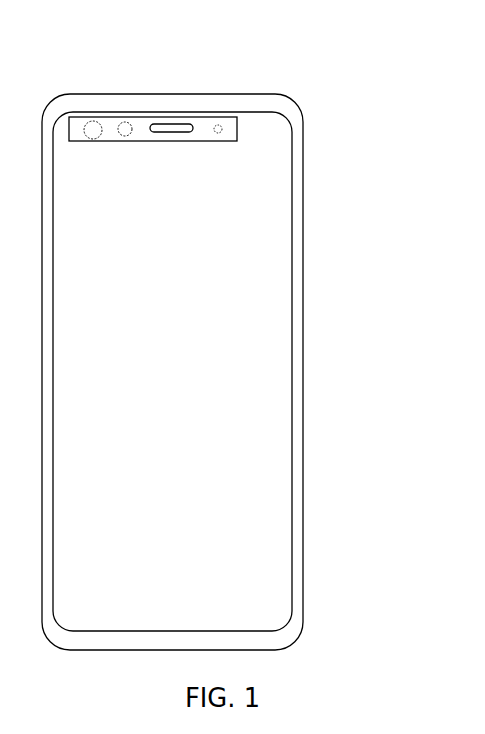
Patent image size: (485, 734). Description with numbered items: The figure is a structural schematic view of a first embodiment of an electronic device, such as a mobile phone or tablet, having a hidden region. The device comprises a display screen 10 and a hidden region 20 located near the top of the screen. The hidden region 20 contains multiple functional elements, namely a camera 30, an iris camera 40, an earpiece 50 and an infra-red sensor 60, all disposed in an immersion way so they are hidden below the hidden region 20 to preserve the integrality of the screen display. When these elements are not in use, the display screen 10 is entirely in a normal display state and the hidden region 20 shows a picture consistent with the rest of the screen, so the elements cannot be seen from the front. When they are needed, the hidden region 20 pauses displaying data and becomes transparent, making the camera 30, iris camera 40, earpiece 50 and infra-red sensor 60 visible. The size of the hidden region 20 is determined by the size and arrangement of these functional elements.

The display screen 10 is at (273, 318).
The hidden region 20 is at (213, 147).
The camera 30 is at (91, 126).
The iris camera 40 is at (121, 126).
The earpiece 50 is at (172, 126).
The infra-red sensor 60 is at (214, 126).